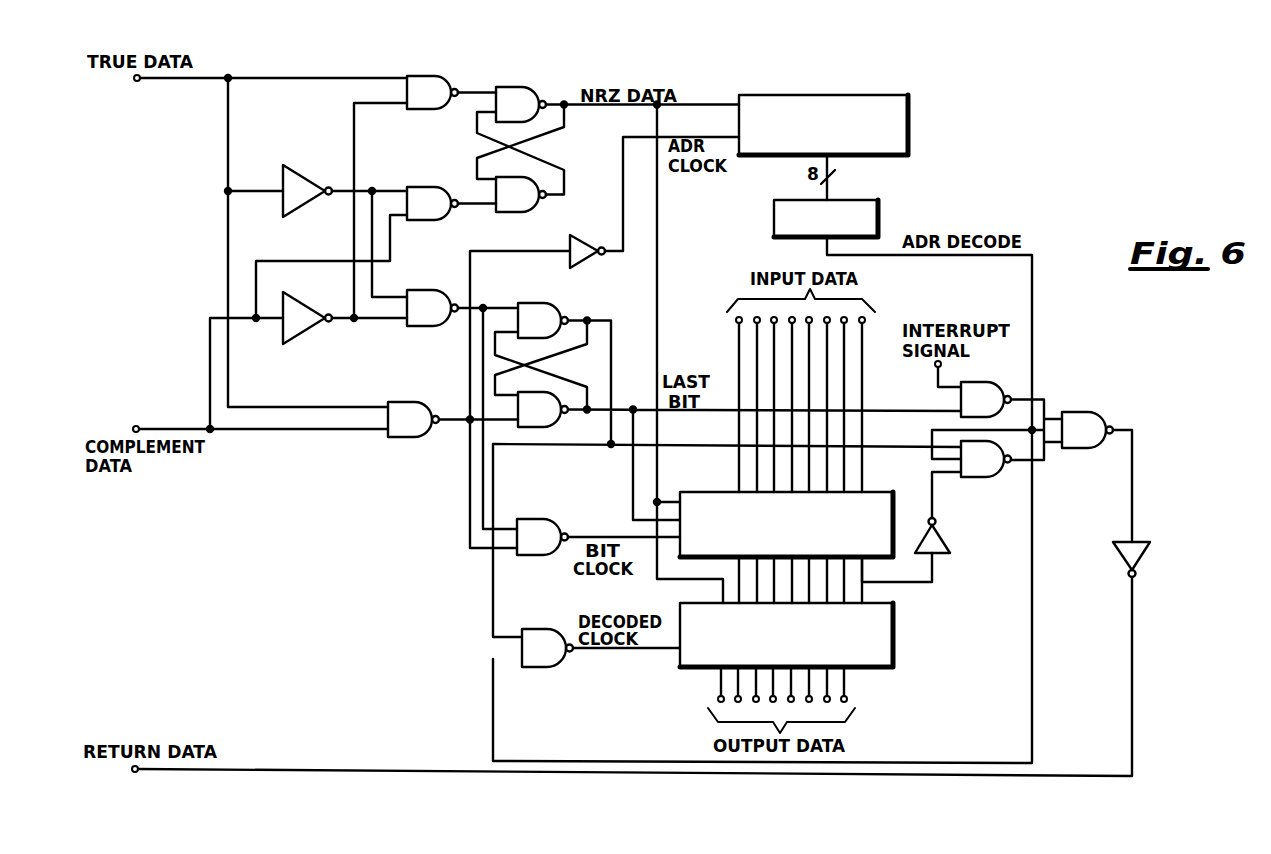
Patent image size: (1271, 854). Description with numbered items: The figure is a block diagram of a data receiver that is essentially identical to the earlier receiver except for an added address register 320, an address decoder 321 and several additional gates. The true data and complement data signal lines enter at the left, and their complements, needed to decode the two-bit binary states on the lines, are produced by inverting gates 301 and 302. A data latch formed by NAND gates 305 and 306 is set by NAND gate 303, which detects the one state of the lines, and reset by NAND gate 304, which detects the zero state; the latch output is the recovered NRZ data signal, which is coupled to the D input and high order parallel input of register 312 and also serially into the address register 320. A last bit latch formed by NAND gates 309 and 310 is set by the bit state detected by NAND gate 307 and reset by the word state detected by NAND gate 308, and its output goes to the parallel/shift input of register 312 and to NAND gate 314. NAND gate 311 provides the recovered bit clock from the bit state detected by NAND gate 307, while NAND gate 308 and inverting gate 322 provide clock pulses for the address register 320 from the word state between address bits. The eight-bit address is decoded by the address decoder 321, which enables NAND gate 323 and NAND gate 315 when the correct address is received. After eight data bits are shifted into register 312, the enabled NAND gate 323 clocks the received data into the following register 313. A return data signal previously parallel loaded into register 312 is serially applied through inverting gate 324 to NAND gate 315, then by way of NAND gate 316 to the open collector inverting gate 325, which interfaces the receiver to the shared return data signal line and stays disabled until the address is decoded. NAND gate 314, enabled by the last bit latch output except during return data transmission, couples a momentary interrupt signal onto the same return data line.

The inverting gate 301 is at (308, 189).
The inverting gate 302 is at (298, 323).
The NAND gate 303 is at (421, 80).
The NAND gate 304 is at (428, 219).
The NAND gate 305 is at (513, 95).
The NAND gate 306 is at (513, 207).
The NAND gate 307 is at (421, 323).
The NAND gate 308 is at (404, 406).
The NAND gate 309 is at (540, 311).
The NAND gate 310 is at (543, 414).
The NAND gate 311 is at (537, 521).
The register 312 is at (860, 498).
The latch 313 is at (893, 644).
The NAND gate 314 is at (980, 386).
The NAND gate 315 is at (967, 477).
The NAND gate 316 is at (1078, 410).
The address register 320 is at (910, 118).
The address decoder 321 is at (880, 207).
The inverting gate 322 is at (576, 264).
The NAND gate 323 is at (540, 667).
The inverting gate 324 is at (937, 533).
The open collector inverting gate 325 is at (1133, 548).